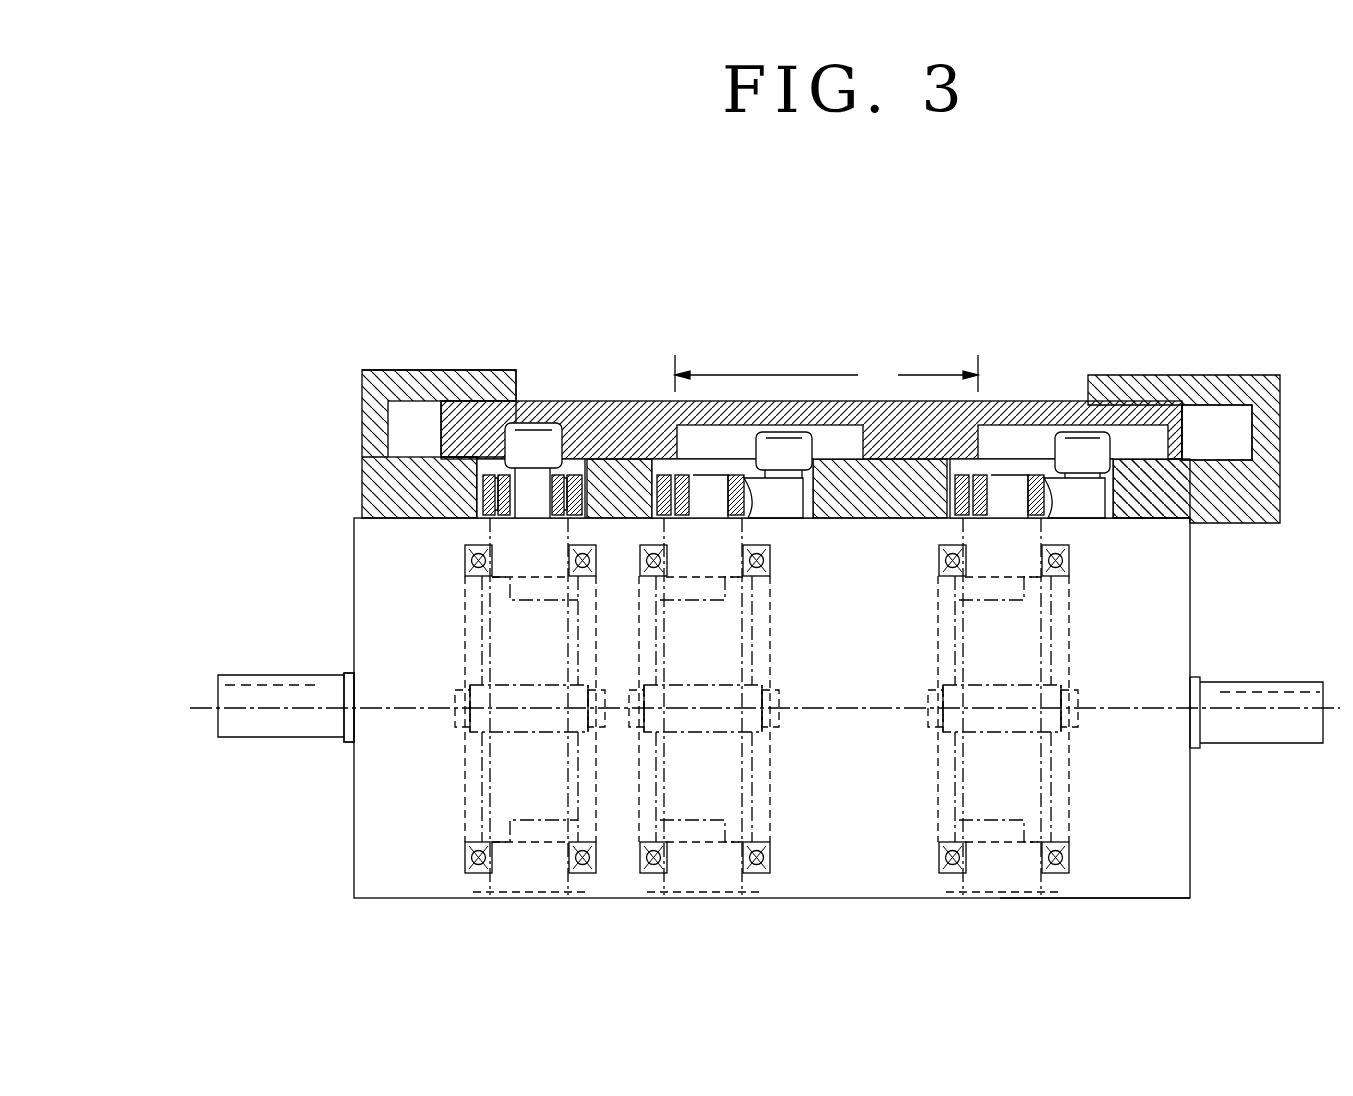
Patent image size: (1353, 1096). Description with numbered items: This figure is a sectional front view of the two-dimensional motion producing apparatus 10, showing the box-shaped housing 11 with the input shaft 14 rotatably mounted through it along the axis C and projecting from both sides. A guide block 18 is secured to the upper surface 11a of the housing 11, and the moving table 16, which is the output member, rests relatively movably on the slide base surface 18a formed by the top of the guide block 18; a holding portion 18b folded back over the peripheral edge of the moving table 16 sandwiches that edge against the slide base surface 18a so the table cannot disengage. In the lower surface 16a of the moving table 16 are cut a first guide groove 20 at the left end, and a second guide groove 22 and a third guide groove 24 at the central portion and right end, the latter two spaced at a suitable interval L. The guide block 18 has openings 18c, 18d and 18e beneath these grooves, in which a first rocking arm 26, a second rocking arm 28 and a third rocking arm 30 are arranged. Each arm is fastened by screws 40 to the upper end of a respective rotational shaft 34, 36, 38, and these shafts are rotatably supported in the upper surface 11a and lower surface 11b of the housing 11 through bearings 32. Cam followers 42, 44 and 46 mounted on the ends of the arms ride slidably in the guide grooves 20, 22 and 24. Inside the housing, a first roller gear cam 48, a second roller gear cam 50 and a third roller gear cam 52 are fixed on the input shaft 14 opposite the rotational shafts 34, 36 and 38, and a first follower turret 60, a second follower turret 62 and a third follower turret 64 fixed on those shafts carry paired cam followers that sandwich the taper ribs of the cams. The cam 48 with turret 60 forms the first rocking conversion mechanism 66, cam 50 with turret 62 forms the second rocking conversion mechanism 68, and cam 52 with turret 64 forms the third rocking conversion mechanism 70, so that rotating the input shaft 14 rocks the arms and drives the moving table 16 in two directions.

The two-dimensional motion producing apparatus 10 is at (1150, 312).
The housing 11 is at (1150, 850).
The upper surface 11a is at (1193, 523).
The lower surface 11b is at (1074, 897).
The input shaft 14 is at (243, 690).
The moving table 16 is at (811, 405).
The lower surface 16a is at (607, 459).
The guide block 18 is at (807, 425).
The slide base surface 18a is at (412, 455).
The holding portion 18b is at (478, 396).
The opening 18c is at (477, 486).
The opening 18d is at (837, 513).
The opening 18e is at (1090, 513).
The first guide groove 20 is at (533, 436).
The second guide groove 22 is at (846, 447).
The third guide groove 24 is at (1165, 441).
The first rocking arm 26 is at (463, 505).
The second rocking arm 28 is at (790, 512).
The third rocking arm 30 is at (1078, 520).
The bearings 32 is at (468, 577).
The rotational shaft 34 is at (443, 742).
The rotational shaft 36 is at (747, 742).
The rotational shaft 38 is at (990, 742).
The screws 40 is at (566, 475).
The cam follower 42 is at (493, 440).
The cam follower 44 is at (804, 440).
The cam follower 46 is at (1113, 450).
The first roller gear cam 48 is at (462, 800).
The second roller gear cam 50 is at (765, 808).
The third roller gear cam 52 is at (935, 745).
The first follower turret 60 is at (432, 727).
The second follower turret 62 is at (712, 740).
The third follower turret 64 is at (1010, 740).
The first rocking conversion mechanism 66 is at (350, 745).
The second rocking conversion mechanism 68 is at (628, 790).
The third rocking conversion mechanism 70 is at (922, 790).
The axis line C is at (888, 708).
The interval L is at (826, 374).